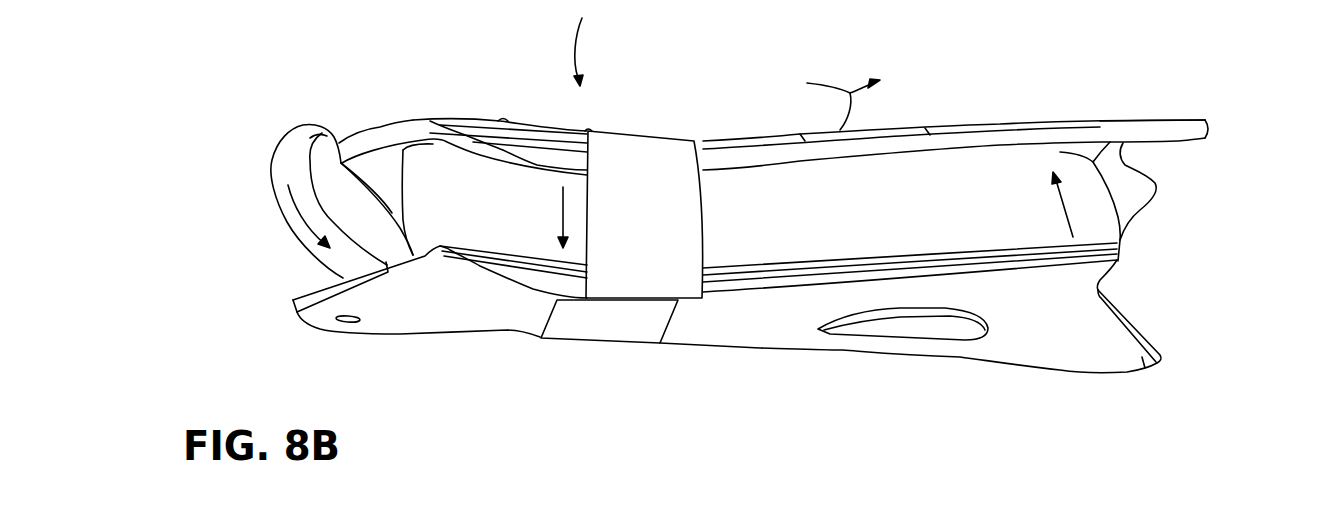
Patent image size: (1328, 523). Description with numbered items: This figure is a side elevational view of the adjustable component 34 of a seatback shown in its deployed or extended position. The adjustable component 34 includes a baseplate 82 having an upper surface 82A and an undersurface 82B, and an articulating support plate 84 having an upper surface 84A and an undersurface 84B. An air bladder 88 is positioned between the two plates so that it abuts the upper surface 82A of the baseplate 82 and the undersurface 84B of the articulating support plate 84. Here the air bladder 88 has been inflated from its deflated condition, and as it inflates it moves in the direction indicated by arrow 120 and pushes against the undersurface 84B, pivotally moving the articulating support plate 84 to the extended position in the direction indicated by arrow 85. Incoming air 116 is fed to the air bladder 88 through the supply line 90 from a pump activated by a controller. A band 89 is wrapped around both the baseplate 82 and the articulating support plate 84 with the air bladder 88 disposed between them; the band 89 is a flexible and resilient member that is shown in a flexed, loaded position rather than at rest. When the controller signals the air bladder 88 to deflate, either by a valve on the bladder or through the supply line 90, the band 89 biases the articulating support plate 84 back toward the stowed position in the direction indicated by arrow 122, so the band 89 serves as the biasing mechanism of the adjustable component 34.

The adjustable component 34 is at (587, 43).
The baseplate 82 is at (1082, 330).
The upper surface of the baseplate 82A is at (1140, 327).
The undersurface of the baseplate 82B is at (1142, 358).
The articulating support plate 84 is at (1002, 137).
The upper surface of the articulating support plate 84A is at (1157, 120).
The undersurface of the articulating support plate 84B is at (1181, 142).
The arrow 85 is at (827, 101).
The air bladder 88 is at (778, 208).
The band 89 is at (647, 183).
The supply line 90 is at (290, 160).
The incoming air 116 is at (297, 220).
The arrow 120 is at (1060, 198).
The arrow 122 is at (557, 213).